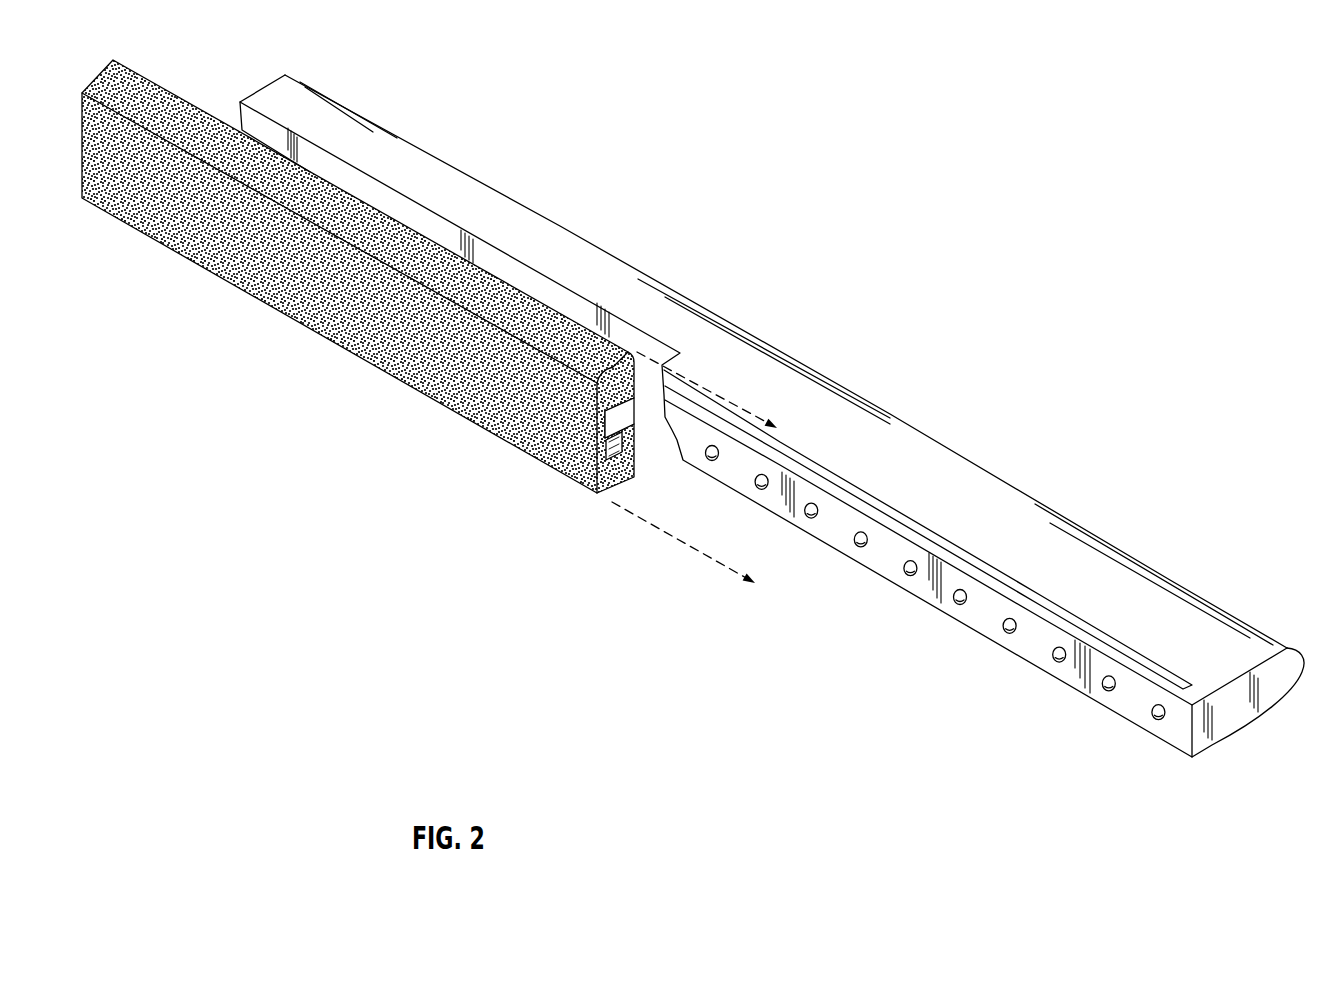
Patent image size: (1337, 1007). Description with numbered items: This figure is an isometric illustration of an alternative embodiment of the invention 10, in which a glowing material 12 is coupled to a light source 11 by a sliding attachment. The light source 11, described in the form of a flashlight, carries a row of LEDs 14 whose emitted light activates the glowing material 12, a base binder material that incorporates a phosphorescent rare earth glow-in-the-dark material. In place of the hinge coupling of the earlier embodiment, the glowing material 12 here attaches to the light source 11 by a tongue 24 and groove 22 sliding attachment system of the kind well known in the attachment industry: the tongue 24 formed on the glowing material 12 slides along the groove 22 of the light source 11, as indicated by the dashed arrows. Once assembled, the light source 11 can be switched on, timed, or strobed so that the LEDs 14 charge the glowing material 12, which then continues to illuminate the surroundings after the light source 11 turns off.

The invention 10 is at (772, 416).
The light source 11 is at (898, 473).
The glowing material 12 is at (383, 340).
The LEDs 14 is at (958, 590).
The groove 22 is at (787, 447).
The tongue 24 is at (580, 432).